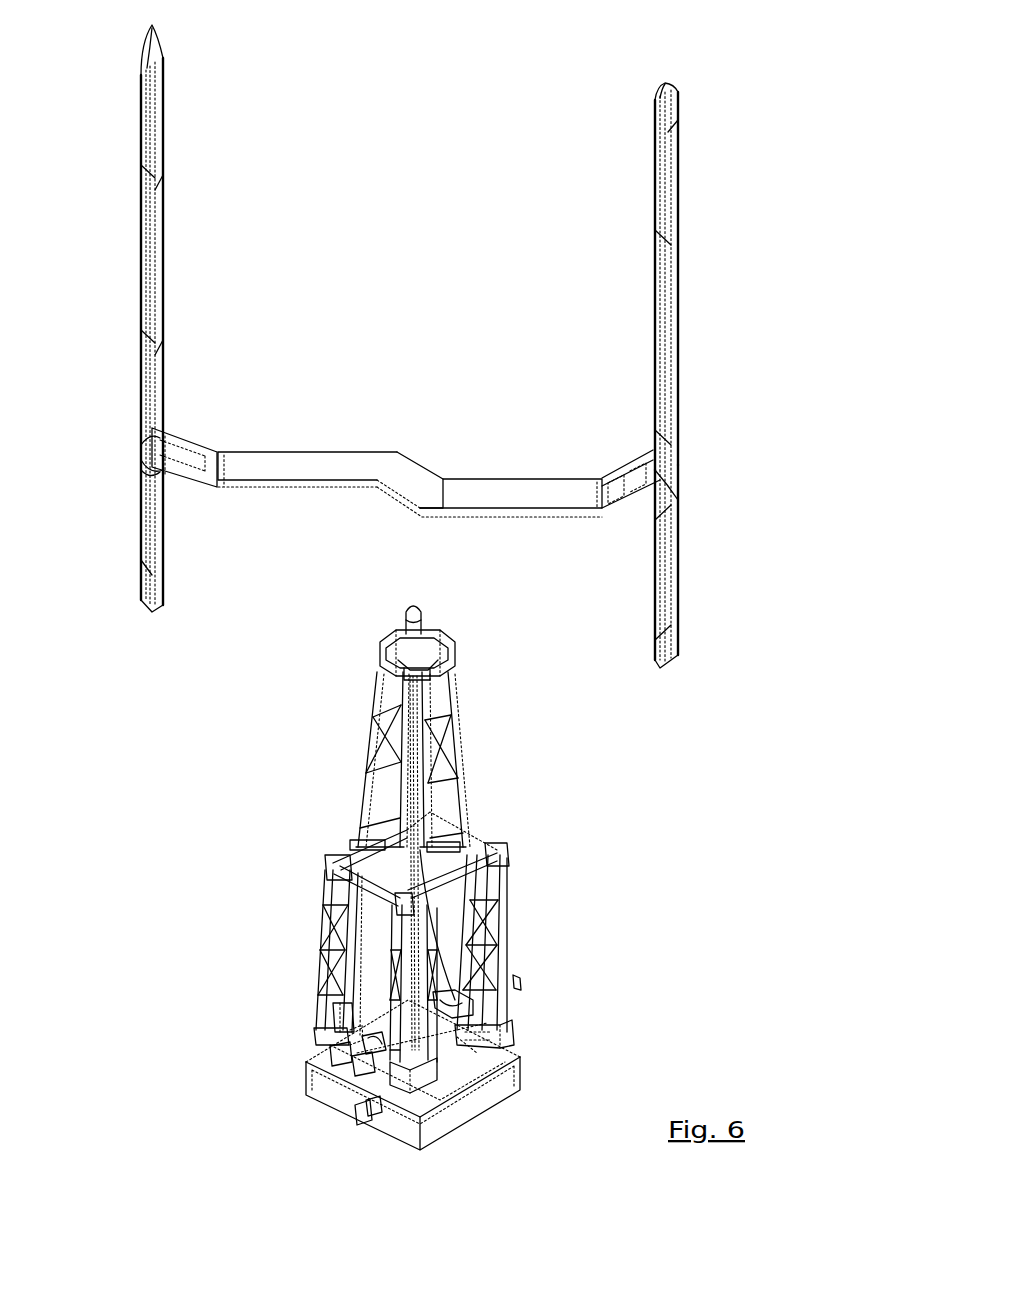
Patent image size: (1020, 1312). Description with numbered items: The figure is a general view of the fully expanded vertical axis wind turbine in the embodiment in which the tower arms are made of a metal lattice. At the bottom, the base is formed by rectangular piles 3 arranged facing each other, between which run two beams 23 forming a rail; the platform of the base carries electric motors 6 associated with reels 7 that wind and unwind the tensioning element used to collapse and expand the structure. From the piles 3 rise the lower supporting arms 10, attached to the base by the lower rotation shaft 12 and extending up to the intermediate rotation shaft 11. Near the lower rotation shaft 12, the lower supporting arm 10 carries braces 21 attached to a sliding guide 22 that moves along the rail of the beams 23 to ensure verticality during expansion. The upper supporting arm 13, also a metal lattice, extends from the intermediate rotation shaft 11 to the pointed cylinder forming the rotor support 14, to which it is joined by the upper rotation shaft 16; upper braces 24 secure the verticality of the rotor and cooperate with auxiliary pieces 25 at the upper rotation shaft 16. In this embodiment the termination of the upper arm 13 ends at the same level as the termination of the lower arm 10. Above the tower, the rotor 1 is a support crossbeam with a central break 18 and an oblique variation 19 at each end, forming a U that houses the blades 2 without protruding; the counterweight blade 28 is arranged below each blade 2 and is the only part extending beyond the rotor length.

The rotor 1 is at (275, 460).
The blades 2 is at (667, 288).
The piles 3 is at (507, 1078).
The electric motors 6 is at (362, 1060).
The reels 7 is at (368, 1043).
The lower supporting arm 10 is at (328, 905).
The intermediate rotation shaft 11 is at (482, 850).
The lower rotation shaft 12 is at (347, 1015).
The upper supporting arm 13 is at (360, 768).
The rotor support 14 is at (407, 626).
The upper rotation shaft 16 is at (393, 648).
The break 18 is at (403, 493).
The oblique variation 19 is at (187, 430).
The braces 21 is at (337, 1055).
The sliding guide 22 is at (362, 1113).
The beams 23 is at (367, 1107).
The upper braces 24 is at (410, 661).
The auxiliary pieces 25 is at (405, 643).
The counterweight blade 28 is at (667, 578).